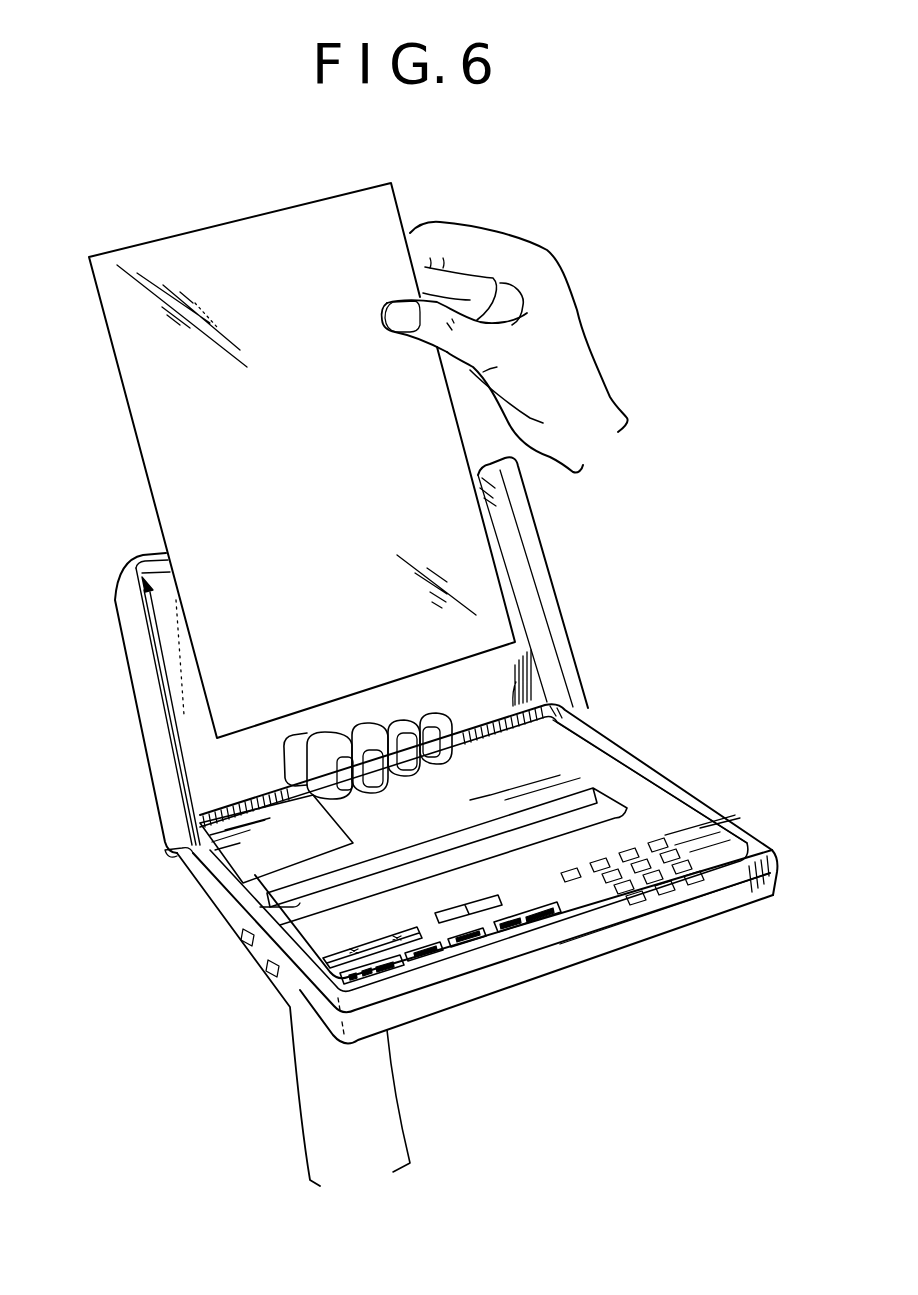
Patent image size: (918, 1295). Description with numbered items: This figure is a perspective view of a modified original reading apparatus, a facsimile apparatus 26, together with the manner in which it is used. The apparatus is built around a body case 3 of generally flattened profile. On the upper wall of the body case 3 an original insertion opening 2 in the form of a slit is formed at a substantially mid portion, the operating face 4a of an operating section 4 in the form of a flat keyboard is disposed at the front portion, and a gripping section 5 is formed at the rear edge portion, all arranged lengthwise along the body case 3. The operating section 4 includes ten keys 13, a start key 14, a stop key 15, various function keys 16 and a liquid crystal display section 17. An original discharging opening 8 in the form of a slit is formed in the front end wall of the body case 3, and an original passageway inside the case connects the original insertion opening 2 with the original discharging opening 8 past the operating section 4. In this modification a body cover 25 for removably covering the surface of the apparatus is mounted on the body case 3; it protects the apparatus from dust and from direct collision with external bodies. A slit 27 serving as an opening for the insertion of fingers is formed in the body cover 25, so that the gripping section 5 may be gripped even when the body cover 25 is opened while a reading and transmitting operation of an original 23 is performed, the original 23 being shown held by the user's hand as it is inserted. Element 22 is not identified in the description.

The original 23 is at (226, 256).
The body cover 25 is at (140, 683).
The facsimile apparatus 26 is at (627, 662).
The gripping section 5 is at (523, 687).
The slit 27 is at (293, 750).
The body case 3 is at (647, 740).
The display 22 is at (200, 873).
The operating section 4 is at (680, 822).
The operating face 4a is at (707, 855).
The ten keys 13 is at (653, 862).
The original discharging opening 8 is at (625, 930).
The liquid crystal display section 17 is at (290, 997).
The function keys 16 is at (427, 963).
The start key 14 is at (480, 913).
The stop key 15 is at (533, 886).
The original insertion opening 2 is at (243, 920).